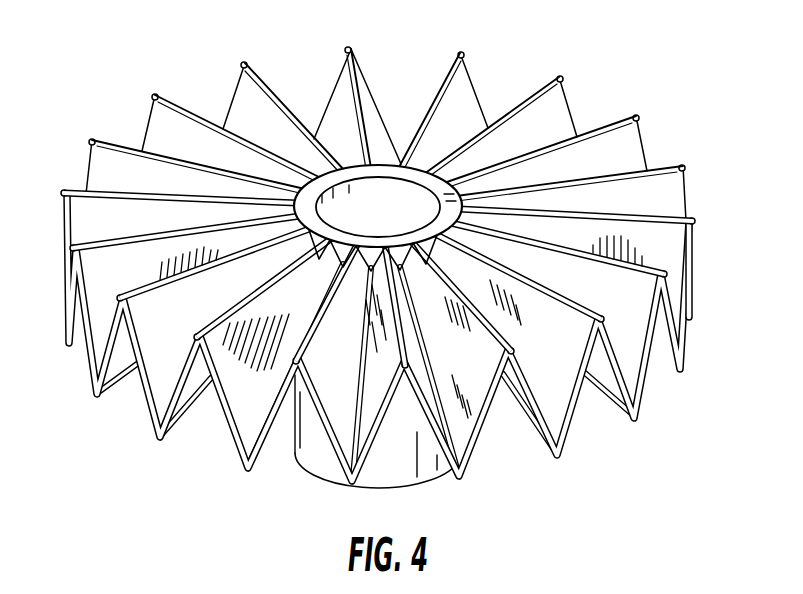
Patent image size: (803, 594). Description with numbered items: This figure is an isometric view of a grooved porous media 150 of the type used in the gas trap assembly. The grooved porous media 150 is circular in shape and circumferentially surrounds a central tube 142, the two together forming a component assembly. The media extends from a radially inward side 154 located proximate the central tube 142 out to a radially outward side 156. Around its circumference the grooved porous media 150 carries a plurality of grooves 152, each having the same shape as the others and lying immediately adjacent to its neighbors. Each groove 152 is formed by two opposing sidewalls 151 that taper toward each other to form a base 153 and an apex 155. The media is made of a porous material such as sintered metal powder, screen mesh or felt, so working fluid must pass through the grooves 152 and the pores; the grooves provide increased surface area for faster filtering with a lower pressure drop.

The central tube 142 is at (385, 193).
The grooved porous media 150 is at (165, 98).
The opposing sidewall 151 is at (264, 428).
The groove 152 is at (248, 375).
The base 153 is at (297, 353).
The radially inward side 154 is at (467, 213).
The apex 155 is at (245, 472).
The radially outward side 156 is at (693, 220).